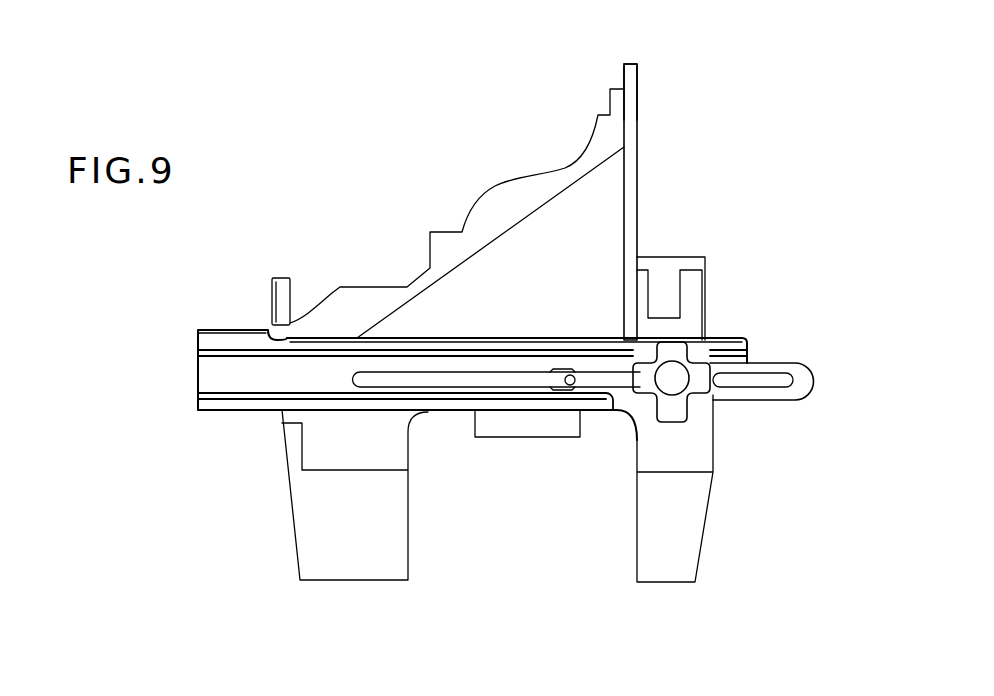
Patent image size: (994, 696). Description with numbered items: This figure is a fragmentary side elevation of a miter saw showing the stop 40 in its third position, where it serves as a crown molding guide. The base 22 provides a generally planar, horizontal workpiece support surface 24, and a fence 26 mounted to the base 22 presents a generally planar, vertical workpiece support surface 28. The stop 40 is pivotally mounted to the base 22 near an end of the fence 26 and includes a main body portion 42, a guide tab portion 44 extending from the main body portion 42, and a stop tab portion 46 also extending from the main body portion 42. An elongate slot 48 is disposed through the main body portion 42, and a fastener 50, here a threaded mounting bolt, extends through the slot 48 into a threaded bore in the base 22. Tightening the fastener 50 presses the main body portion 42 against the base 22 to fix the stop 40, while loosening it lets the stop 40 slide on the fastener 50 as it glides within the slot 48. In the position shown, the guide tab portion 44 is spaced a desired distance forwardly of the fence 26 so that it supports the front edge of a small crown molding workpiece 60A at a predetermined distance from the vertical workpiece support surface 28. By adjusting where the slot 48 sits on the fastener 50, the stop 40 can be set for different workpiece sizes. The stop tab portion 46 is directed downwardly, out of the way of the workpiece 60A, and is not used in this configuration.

The base 22 is at (318, 533).
The workpiece support surface 24 is at (485, 337).
The fence 26 is at (638, 192).
The vertical workpiece support surface 28 is at (623, 73).
The stop 40 is at (237, 411).
The main body portion 42 is at (213, 375).
The guide tab portion 44 is at (280, 287).
The stop tab portion 46 is at (535, 422).
The elongate slot 48 is at (470, 378).
The fastener 50 is at (680, 372).
The crown molding workpiece 60A is at (501, 202).